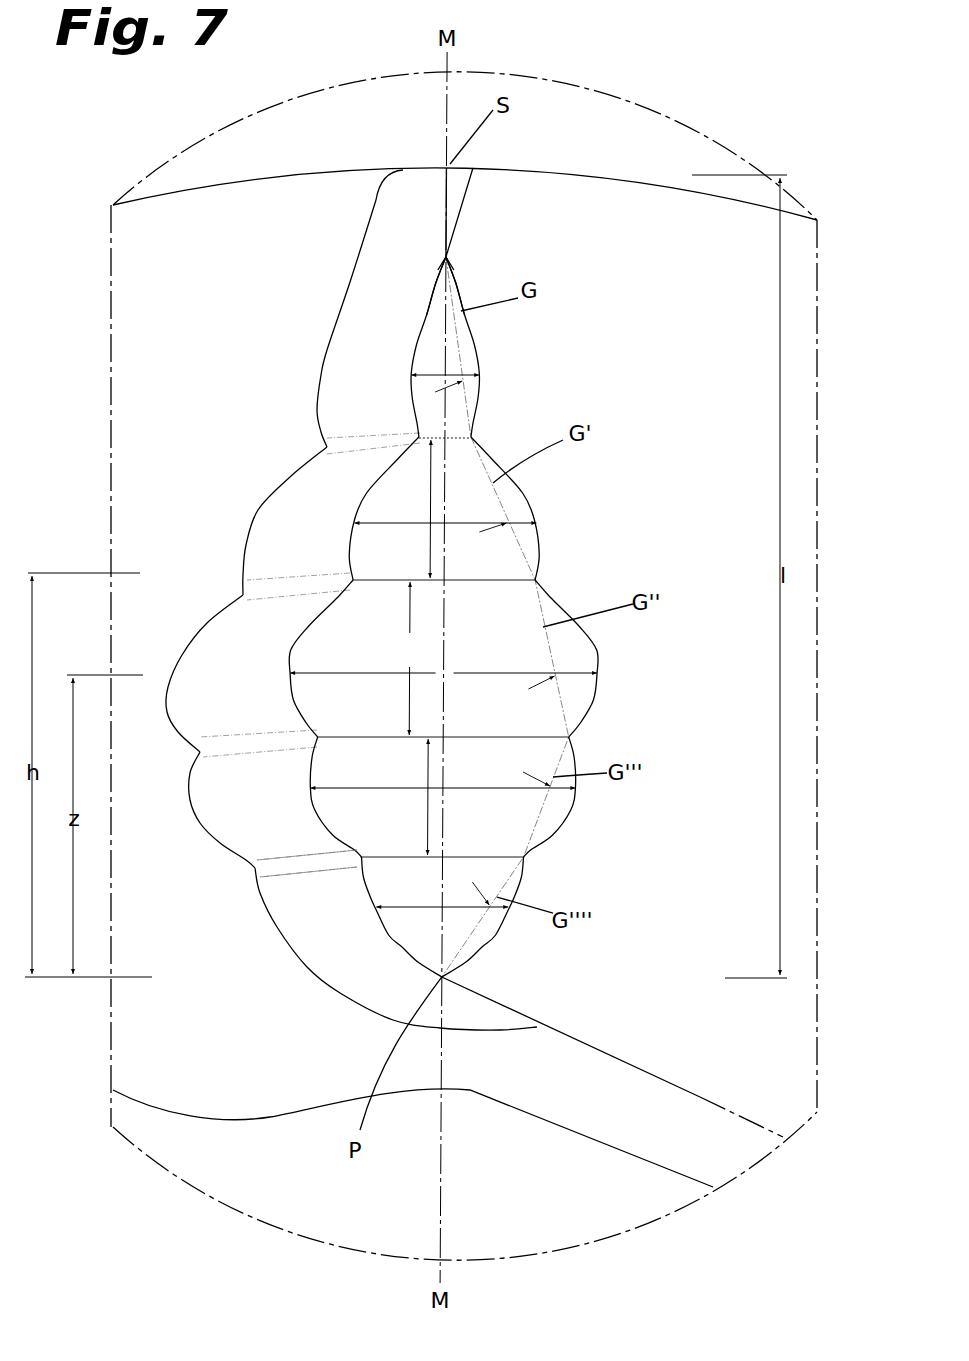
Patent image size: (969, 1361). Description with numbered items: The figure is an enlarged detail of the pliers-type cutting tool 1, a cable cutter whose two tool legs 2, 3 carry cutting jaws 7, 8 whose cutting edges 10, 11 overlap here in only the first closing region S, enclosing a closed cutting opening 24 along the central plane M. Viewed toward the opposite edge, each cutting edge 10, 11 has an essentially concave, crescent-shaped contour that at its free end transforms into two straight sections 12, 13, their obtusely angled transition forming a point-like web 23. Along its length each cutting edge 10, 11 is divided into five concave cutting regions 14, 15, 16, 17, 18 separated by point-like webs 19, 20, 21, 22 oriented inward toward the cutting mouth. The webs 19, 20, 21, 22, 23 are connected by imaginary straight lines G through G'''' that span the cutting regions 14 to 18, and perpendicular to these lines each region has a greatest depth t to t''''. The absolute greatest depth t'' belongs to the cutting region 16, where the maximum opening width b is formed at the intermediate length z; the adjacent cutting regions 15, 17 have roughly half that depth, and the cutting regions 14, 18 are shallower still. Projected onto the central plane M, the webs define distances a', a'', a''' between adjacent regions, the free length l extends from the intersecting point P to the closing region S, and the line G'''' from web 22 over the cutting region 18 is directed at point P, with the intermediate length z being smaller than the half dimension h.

The pliers-type cutting tool 1 is at (632, 132).
The tool leg 2 is at (764, 1082).
The tool leg 3 is at (167, 1052).
The cutting jaw 7 is at (155, 305).
The cutting jaw 8 is at (668, 240).
The cutting edge 10 is at (291, 700).
The cutting edge 11 is at (545, 541).
The straight section 12 is at (432, 303).
The straight section 13 is at (440, 195).
The concave cutting region 14 is at (411, 366).
The concave cutting region 15 is at (351, 510).
The concave cutting region 16 is at (285, 655).
The concave cutting region 17 is at (300, 820).
The concave cutting region 18 is at (389, 954).
The point-like web 19 is at (420, 437).
The point-like web 20 is at (351, 581).
The point-like web 21 is at (316, 738).
The point-like web 22 is at (358, 857).
The point-like web 23 is at (441, 260).
The cutting opening 24 is at (378, 870).